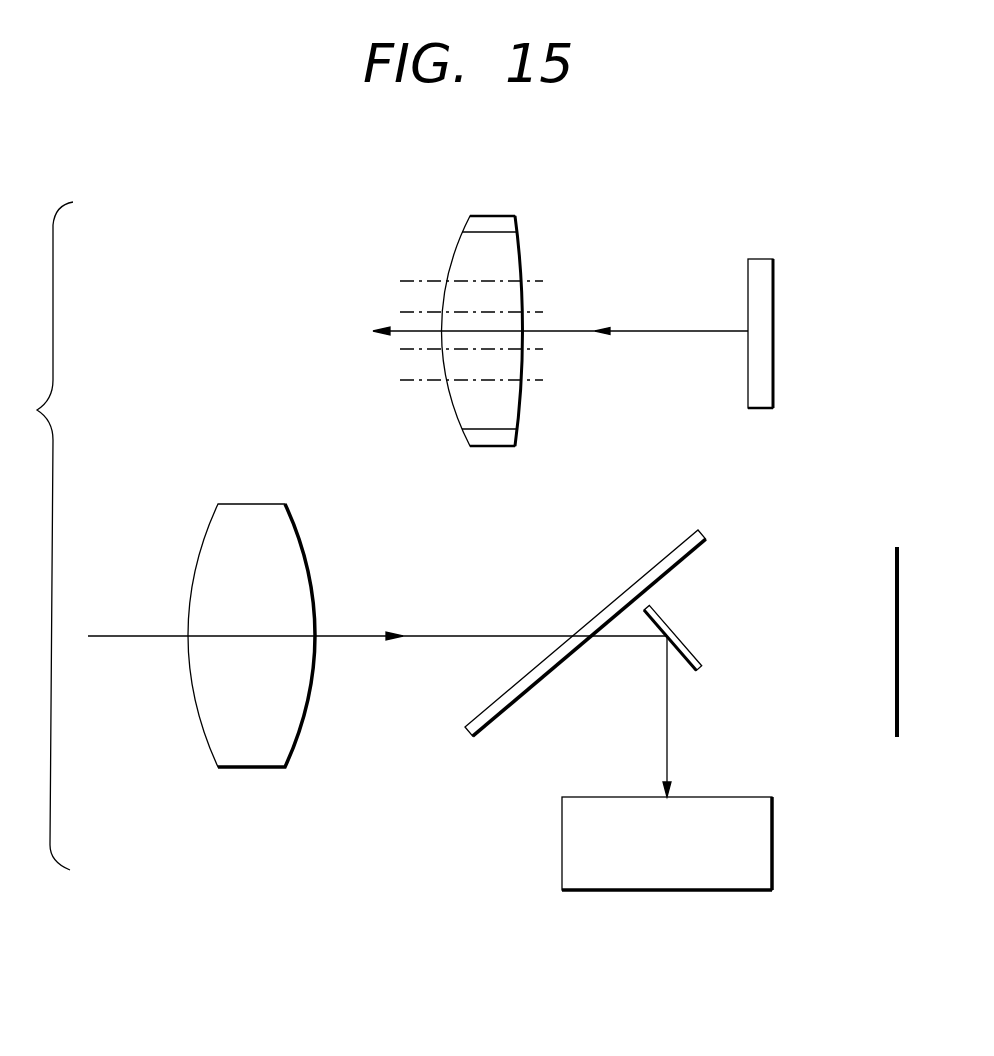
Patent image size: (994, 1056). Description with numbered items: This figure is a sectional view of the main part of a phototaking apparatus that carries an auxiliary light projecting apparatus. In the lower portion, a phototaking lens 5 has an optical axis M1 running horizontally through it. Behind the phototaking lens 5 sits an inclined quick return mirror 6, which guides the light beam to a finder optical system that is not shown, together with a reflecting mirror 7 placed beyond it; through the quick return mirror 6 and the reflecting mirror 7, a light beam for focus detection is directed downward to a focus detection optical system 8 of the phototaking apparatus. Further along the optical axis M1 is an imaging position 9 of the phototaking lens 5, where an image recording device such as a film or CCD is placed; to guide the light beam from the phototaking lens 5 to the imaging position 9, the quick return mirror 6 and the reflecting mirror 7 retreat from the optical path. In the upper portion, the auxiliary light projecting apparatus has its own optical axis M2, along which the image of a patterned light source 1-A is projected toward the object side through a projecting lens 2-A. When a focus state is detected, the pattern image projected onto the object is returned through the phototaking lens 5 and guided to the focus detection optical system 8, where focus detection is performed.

The patterned light source 1-A is at (774, 385).
The projecting lens 2-A is at (521, 410).
The phototaking lens 5 is at (251, 771).
The quick return mirror 6 is at (500, 712).
The reflecting mirror 7 is at (692, 647).
The focus detection optical system 8 is at (773, 823).
The imaging position 9 is at (895, 716).
The optical axis M1 is at (437, 640).
The optical axis M2 is at (677, 336).